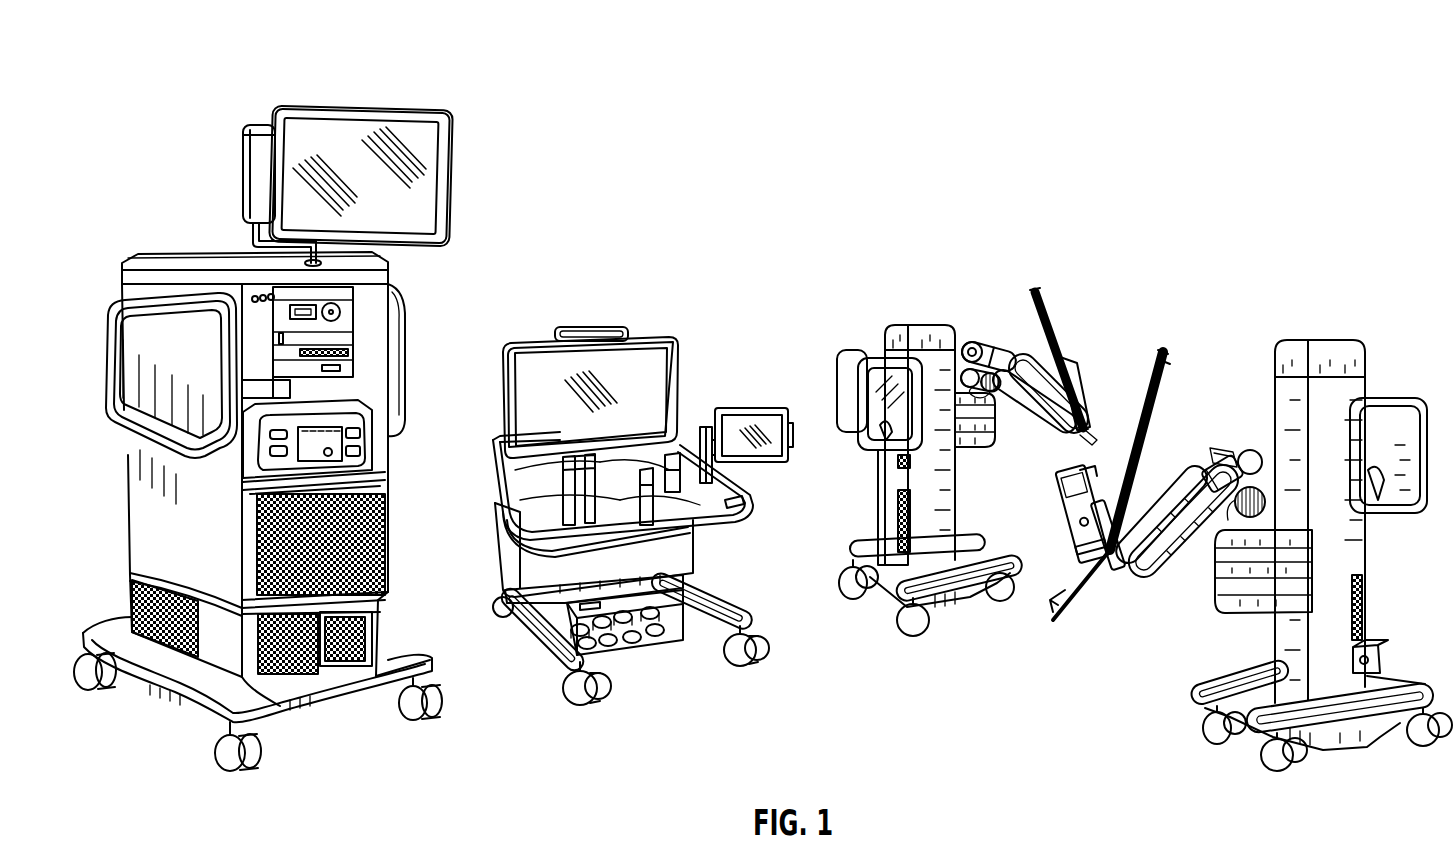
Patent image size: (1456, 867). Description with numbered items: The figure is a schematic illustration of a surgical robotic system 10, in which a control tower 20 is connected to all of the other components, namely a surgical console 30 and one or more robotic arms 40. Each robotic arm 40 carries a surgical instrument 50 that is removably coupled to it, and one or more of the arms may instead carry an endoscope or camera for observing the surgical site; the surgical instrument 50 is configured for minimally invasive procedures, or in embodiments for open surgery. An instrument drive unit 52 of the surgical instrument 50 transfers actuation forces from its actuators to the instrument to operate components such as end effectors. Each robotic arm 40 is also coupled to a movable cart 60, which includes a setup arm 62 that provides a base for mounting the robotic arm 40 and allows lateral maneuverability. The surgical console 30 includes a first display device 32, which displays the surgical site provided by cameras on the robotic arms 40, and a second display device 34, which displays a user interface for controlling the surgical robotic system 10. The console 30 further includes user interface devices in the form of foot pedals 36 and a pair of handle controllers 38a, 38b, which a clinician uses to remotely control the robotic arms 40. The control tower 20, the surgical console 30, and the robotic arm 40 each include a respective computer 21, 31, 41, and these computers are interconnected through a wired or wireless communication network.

The surgical robotic system 10 is at (175, 96).
The control tower 20 is at (150, 527).
The computer 21 is at (370, 538).
The surgical console 30 is at (697, 393).
The computer 31 is at (508, 558).
The first display device 32 is at (650, 340).
The second display device 34 is at (753, 408).
The foot pedals 36 is at (645, 640).
The handle controller 38a is at (498, 442).
The handle controller 38b is at (748, 497).
The robotic arm 40 is at (1013, 343).
The computer 41 is at (953, 504).
The surgical instrument 50 is at (1063, 607).
The instrument drive unit 52 is at (1083, 493).
The movable cart 60 is at (930, 324).
The setup arm 62 is at (1285, 653).